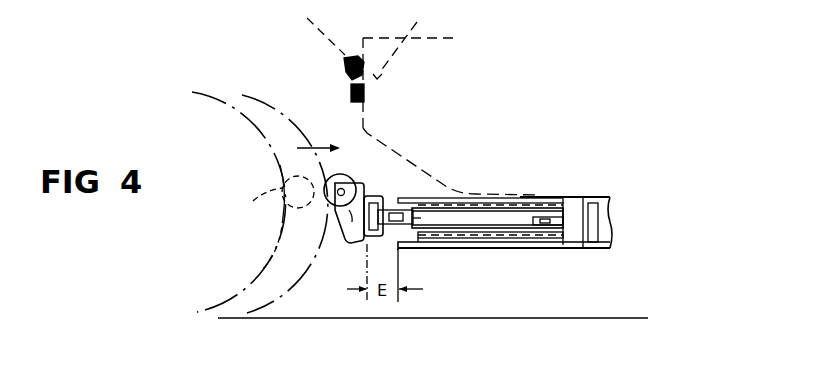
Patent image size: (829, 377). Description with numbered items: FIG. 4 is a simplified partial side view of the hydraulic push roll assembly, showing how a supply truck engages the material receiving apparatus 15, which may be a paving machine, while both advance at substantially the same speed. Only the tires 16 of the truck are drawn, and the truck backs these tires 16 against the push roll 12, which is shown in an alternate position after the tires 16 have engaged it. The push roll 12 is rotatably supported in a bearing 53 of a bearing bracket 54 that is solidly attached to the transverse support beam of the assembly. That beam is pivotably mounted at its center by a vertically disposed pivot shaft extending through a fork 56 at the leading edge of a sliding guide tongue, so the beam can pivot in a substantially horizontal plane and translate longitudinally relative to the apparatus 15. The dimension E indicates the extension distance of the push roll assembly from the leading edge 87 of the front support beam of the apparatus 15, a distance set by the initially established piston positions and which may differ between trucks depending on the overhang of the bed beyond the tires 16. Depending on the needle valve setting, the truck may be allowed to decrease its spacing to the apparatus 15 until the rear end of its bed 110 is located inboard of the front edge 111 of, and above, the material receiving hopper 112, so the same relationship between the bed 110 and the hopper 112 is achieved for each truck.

The left push roll 12 is at (350, 161).
The material receiving apparatus 15 is at (603, 162).
The tires 16 is at (303, 297).
The bearing 53 is at (350, 181).
The bearing bracket 54 is at (350, 237).
The fork 56 is at (384, 196).
The leading edge of the front support beam 87 is at (389, 245).
The truck bed 110 is at (422, 14).
The front edge of the hopper 111 is at (345, 67).
The material receiving hopper 112 is at (358, 108).